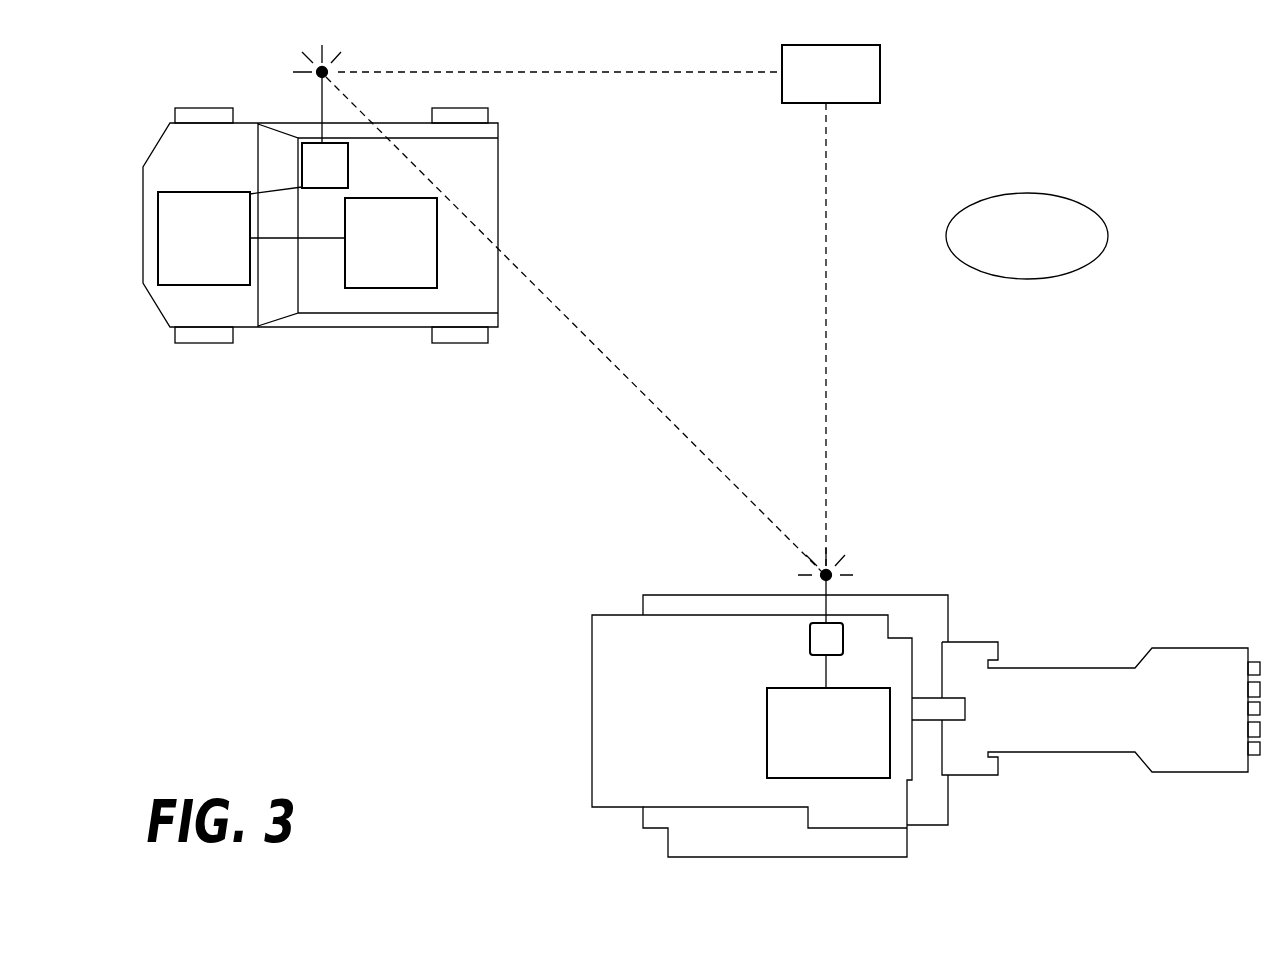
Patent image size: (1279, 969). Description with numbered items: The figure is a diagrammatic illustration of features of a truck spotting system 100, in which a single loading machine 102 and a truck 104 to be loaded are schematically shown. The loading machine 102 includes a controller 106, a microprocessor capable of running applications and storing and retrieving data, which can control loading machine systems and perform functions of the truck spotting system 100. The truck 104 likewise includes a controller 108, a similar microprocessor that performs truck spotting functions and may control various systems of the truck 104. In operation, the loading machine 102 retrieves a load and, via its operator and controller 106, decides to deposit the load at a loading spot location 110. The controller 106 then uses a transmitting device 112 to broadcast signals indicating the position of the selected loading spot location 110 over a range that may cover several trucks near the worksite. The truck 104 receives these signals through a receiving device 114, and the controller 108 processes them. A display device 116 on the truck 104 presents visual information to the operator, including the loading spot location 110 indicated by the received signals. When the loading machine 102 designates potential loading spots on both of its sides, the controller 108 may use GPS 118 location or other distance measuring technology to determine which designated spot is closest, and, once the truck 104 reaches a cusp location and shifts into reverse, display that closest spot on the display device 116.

The truck spotting system 100 is at (535, 484).
The loading machine 102 is at (592, 667).
The truck 104 is at (250, 327).
The controller 106 is at (767, 717).
The controller 108 is at (233, 192).
The loading spot location 110 is at (1030, 193).
The transmitting device 112 is at (810, 632).
The receiving device 114 is at (348, 155).
The display device 116 is at (437, 238).
The GPS 118 is at (880, 68).